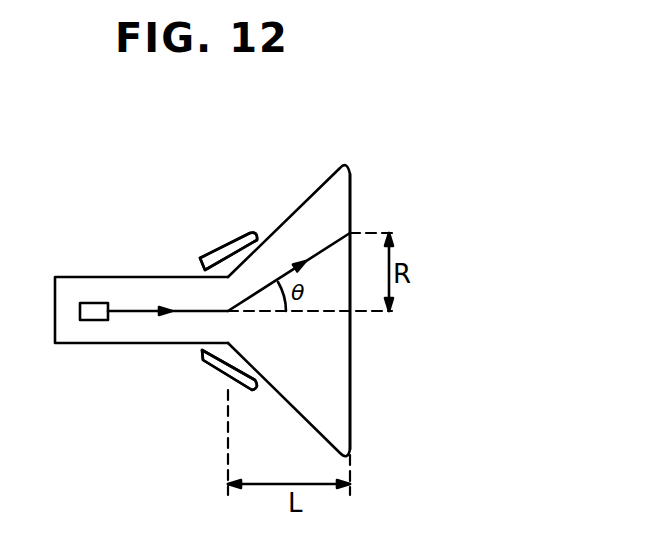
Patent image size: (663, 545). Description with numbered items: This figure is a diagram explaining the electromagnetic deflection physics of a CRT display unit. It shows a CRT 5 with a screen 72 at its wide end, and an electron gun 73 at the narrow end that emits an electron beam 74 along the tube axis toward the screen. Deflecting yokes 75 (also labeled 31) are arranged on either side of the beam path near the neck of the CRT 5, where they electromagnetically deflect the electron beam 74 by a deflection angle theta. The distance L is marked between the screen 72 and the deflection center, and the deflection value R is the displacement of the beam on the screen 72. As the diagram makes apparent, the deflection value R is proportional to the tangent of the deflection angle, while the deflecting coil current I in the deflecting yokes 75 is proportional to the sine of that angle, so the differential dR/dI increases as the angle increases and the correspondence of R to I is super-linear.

The CRT 5 is at (308, 190).
The screen of the CRT 72 is at (350, 198).
The electron gun 73 is at (92, 320).
The electron beam 74 is at (137, 312).
The deflecting yokes 75 is at (220, 352).
The dielectric plates 31 is at (228, 311).